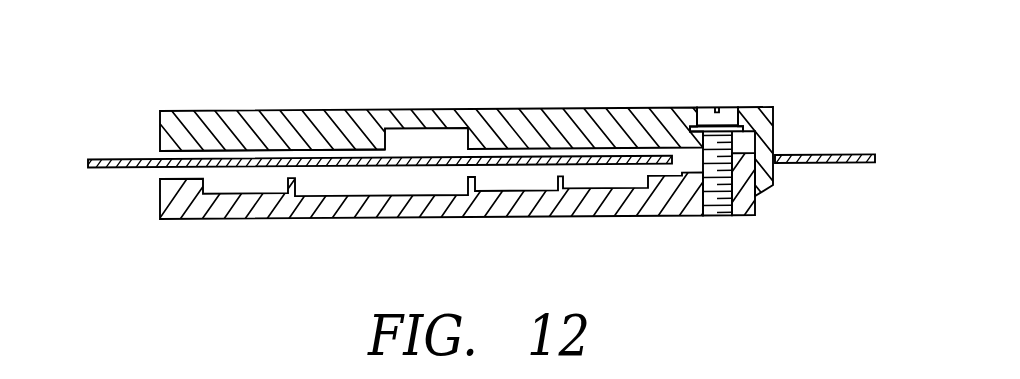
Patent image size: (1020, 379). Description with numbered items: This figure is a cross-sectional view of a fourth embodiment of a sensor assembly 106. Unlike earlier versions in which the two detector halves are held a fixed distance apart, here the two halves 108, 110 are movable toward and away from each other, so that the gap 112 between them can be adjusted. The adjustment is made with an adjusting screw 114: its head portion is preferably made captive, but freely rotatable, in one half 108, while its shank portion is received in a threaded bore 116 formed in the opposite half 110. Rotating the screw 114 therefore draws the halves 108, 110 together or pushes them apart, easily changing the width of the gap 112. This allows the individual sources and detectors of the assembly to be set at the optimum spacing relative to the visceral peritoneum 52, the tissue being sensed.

The sensor assembly 106 is at (635, 80).
The half 108 is at (160, 111).
The half 110 is at (165, 215).
The gap 112 is at (163, 152).
The visceral peritoneum 52 is at (116, 167).
The adjusting screw 114 is at (728, 107).
The threaded bore 116 is at (715, 215).